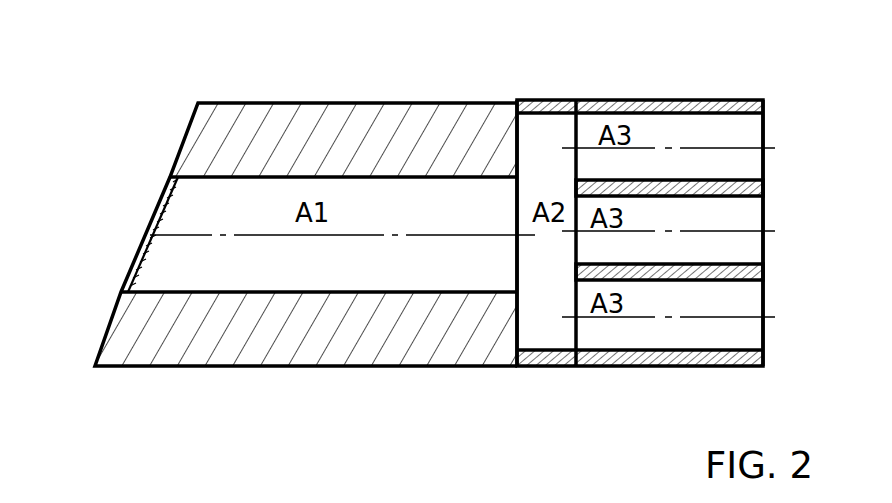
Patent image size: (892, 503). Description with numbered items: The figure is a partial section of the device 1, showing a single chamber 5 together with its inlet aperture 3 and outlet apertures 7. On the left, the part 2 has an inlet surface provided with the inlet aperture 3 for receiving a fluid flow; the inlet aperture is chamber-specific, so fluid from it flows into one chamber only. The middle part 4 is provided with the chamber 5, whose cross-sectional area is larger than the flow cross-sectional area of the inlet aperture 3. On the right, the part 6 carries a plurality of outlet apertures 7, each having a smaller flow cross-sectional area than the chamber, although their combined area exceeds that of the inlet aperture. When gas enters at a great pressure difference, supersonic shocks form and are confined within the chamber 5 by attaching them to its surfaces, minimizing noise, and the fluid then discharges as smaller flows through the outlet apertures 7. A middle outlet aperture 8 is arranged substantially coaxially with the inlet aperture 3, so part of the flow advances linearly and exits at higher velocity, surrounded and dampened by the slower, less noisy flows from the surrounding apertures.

The device 1 is at (79, 138).
The part 2 is at (317, 367).
The inlet aperture 3 is at (153, 275).
The middle part 4 is at (538, 367).
The chamber 5 is at (555, 128).
The part 6 is at (622, 367).
The outlet aperture 7 is at (757, 128).
The middle outlet aperture 8 is at (757, 212).